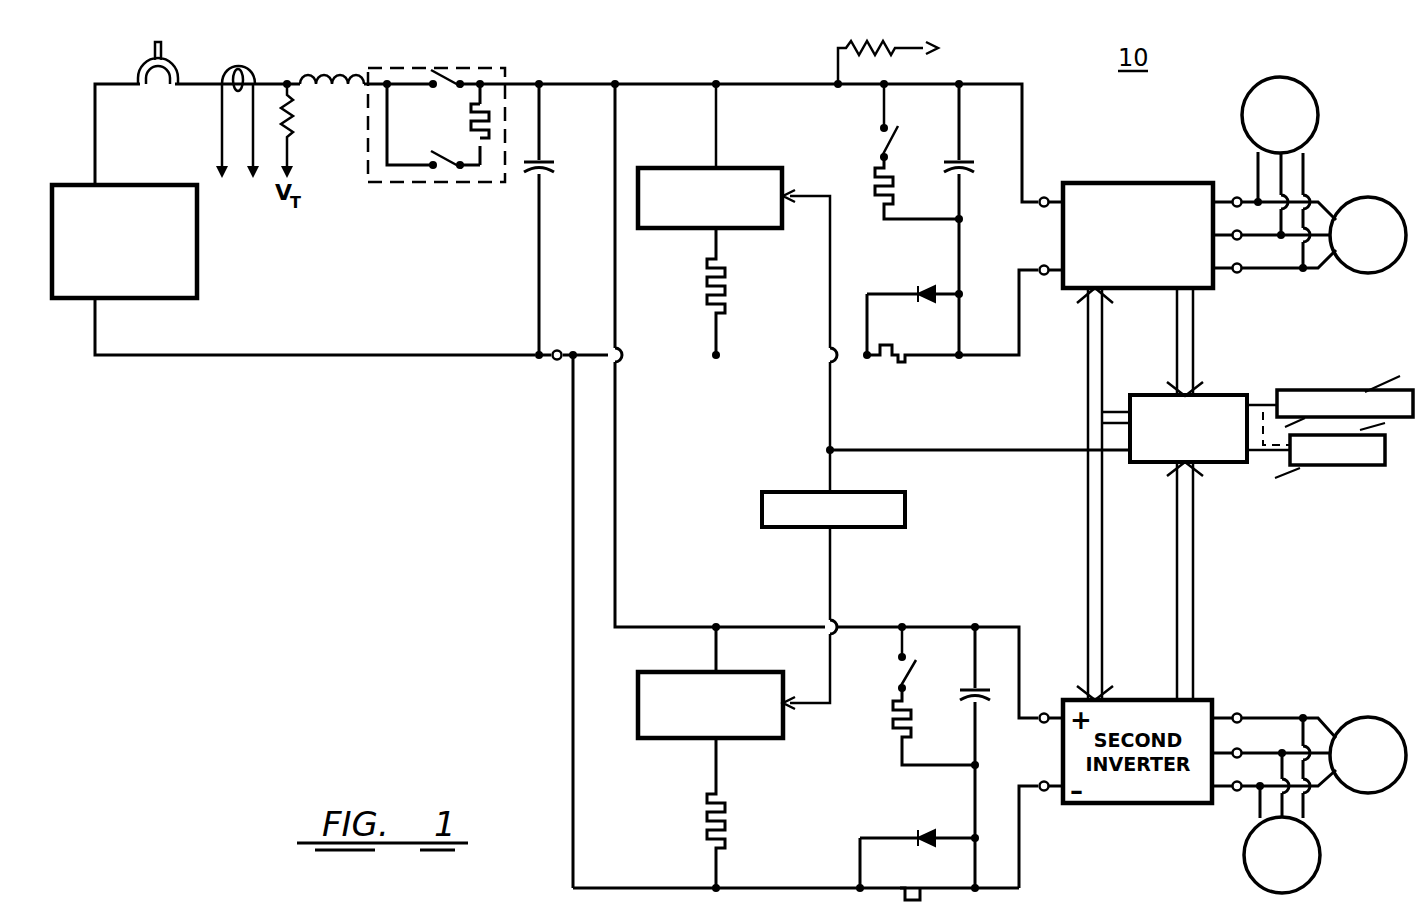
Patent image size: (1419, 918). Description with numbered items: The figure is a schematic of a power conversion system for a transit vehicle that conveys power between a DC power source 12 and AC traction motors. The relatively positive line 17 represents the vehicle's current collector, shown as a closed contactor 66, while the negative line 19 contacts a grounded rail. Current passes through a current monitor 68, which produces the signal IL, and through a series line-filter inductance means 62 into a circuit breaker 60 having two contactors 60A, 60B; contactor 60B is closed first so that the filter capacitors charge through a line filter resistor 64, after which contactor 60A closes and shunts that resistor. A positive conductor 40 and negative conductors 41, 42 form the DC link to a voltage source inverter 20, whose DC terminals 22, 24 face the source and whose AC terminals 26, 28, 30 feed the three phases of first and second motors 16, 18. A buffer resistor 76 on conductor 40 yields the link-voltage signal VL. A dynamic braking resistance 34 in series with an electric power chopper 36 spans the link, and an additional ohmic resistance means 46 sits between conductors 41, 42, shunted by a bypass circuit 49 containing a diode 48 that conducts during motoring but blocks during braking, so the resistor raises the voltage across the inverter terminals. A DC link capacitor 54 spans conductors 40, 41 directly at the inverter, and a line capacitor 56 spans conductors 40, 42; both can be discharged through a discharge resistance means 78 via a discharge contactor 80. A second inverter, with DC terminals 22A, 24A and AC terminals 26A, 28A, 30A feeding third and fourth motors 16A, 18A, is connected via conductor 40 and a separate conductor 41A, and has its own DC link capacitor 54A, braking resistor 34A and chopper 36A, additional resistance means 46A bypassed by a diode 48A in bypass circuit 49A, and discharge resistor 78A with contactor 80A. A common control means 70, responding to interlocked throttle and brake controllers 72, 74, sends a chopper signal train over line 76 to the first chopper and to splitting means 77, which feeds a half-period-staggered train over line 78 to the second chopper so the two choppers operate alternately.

The DC power source 12 is at (197, 256).
The first motor 16 is at (1385, 197).
The third AC motor 16A is at (1380, 718).
The positive line 17 is at (95, 128).
The second motor 18 is at (1292, 78).
The fourth AC motor 18A is at (1318, 840).
The negative line 19 is at (95, 340).
The controllable converter 20 is at (1110, 180).
The positive DC terminal 22 is at (1046, 196).
The positive DC terminal of second inverter 22A is at (1045, 712).
The negative DC terminal 24 is at (1040, 266).
The negative DC terminal of second inverter 24A is at (1046, 792).
The AC terminal 26 is at (1238, 196).
The AC terminal of second inverter 26A is at (1238, 712).
The AC terminal 28 is at (1243, 218).
The AC terminal of second inverter 28A is at (1250, 738).
The AC terminal 30 is at (1238, 272).
The AC terminal of second inverter 30A is at (1236, 790).
The dynamic braking resistance 34 is at (725, 295).
The second dynamic braking resistor 34A is at (706, 816).
The electric power chopper 36 is at (690, 228).
The second electric power chopper 36A is at (678, 738).
The positive conductor 40 is at (700, 84).
The negative conductor 41 is at (1019, 342).
The separate negative conductor 41A is at (1019, 855).
The common negative conductor 42 is at (554, 362).
The additional ohmic resistance means 46 is at (890, 362).
The second additional ohmic resistance means 46A is at (903, 886).
The diode 48 is at (926, 277).
The diode 48A is at (929, 823).
The bypass circuit 49 is at (880, 292).
The bypass circuit of second inverter 49A is at (858, 838).
The DC link capacitor 54 is at (968, 168).
The second DC link capacitor 54A is at (980, 700).
The line capacitor 56 is at (548, 176).
The circuit breaker 60 is at (477, 123).
The contactor 60A is at (450, 82).
The contactor 60B is at (450, 170).
The line-filter inductance means 62 is at (338, 72).
The line filter resistor 64 is at (490, 136).
The closed contactor 66 is at (148, 76).
The current monitor 68 is at (238, 72).
The control means 70 is at (1218, 392).
The throttle controller 72 is at (1338, 390).
The brake controller 74 is at (1372, 468).
The buffer resistor / signal line 76 is at (840, 46).
The splitting means 77 is at (905, 512).
The discharge resistance means / signal line 78 is at (876, 180).
The discharge resistance means of second circuit 78A is at (891, 736).
The discharge contactor 80 is at (882, 146).
The discharge contactor of second circuit 80A is at (912, 672).